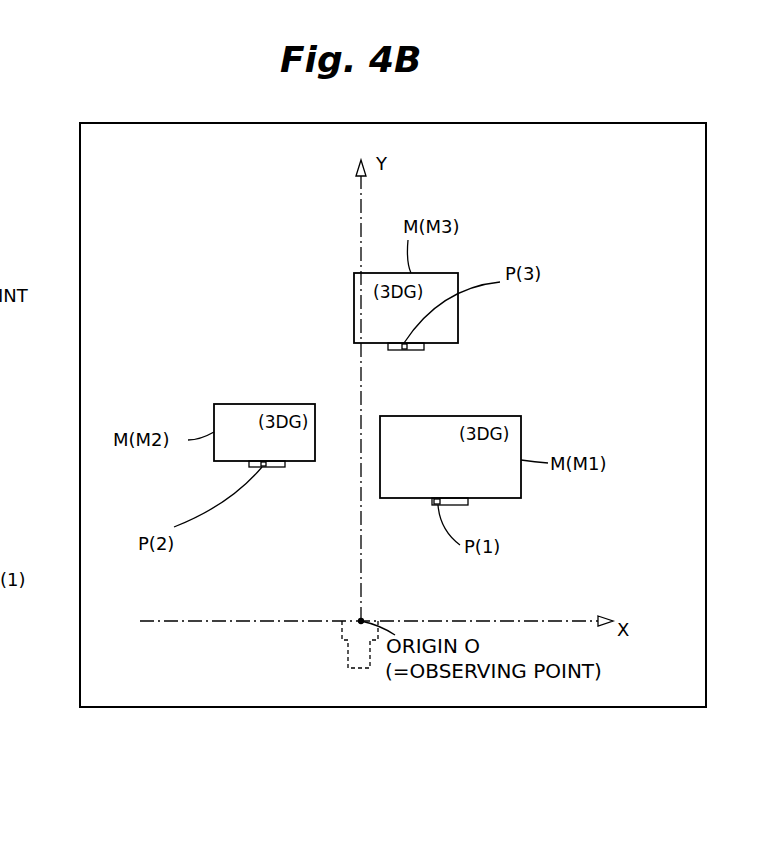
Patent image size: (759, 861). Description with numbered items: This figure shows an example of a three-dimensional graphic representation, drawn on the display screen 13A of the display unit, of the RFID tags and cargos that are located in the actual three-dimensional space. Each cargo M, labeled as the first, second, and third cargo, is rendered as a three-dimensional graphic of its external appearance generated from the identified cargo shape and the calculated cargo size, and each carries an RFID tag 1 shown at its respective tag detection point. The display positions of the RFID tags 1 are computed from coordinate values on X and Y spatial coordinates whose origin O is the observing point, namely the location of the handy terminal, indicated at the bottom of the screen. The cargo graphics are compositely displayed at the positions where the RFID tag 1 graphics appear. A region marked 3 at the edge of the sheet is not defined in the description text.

The RFID tag 1 is at (425, 348).
The display area 3 is at (56, 687).
The display screen 13A is at (706, 707).